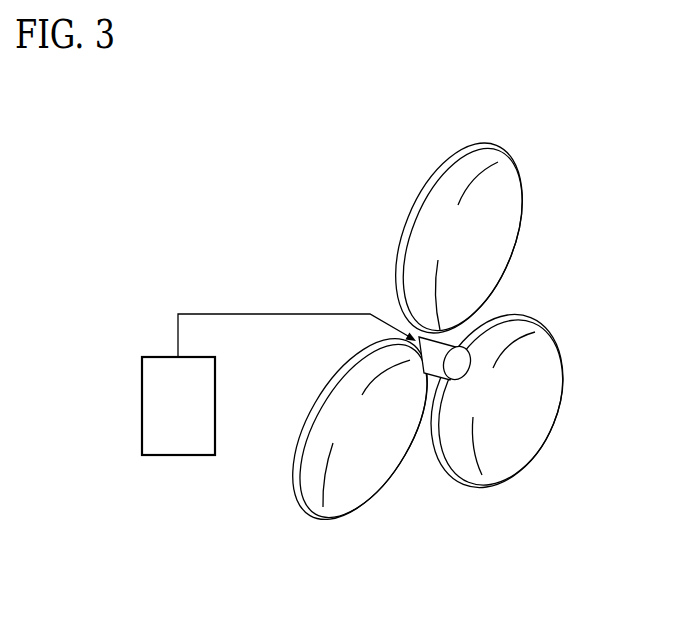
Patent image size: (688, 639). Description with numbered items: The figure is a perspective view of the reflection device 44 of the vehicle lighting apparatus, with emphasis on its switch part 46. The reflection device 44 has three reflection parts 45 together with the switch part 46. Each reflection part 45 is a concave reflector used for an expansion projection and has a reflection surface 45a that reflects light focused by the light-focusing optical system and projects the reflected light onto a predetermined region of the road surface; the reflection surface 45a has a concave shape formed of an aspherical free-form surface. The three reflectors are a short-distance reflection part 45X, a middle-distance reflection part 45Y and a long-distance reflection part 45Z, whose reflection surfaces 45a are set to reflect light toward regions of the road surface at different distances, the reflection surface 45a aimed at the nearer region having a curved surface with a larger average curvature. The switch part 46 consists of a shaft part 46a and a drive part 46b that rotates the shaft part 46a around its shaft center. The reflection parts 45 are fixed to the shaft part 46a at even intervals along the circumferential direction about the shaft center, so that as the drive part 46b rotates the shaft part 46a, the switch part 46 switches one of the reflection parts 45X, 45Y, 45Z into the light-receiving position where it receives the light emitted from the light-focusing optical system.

The reflection device 44 is at (550, 130).
The reflection part 45 is at (435, 344).
The short-distance reflection part 45X is at (457, 145).
The middle-distance reflection part 45Y is at (539, 455).
The long-distance reflection part 45Z is at (302, 503).
The reflection surface 45a is at (473, 247).
The switch part 46 is at (265, 536).
The shaft part 46a is at (418, 343).
The drive part 46b is at (175, 455).